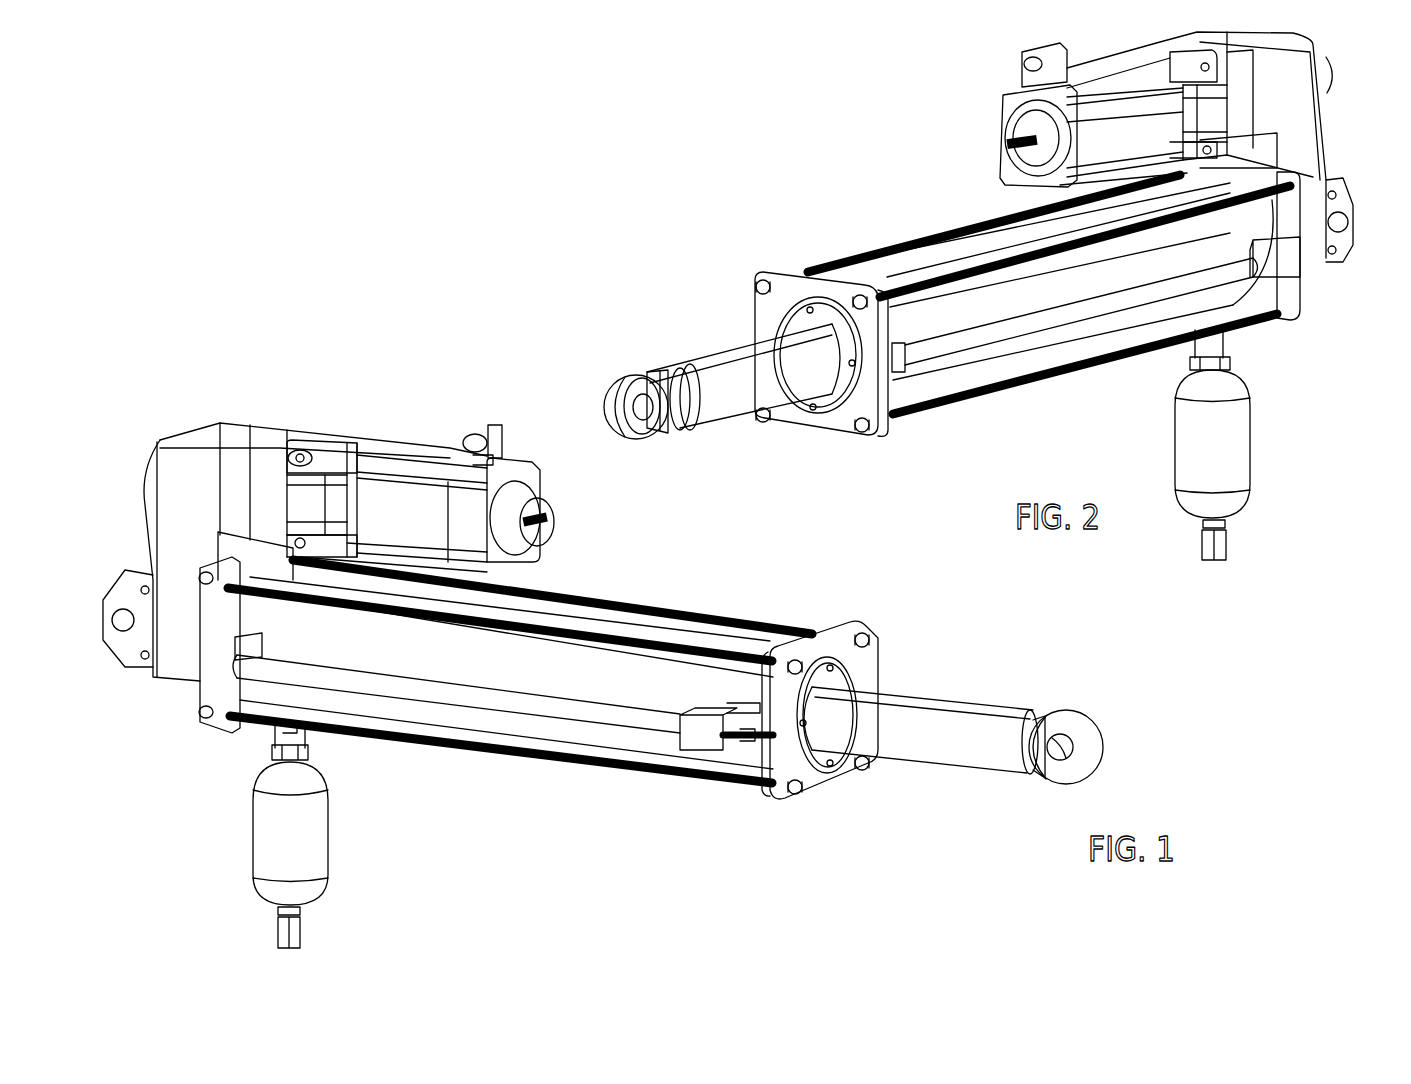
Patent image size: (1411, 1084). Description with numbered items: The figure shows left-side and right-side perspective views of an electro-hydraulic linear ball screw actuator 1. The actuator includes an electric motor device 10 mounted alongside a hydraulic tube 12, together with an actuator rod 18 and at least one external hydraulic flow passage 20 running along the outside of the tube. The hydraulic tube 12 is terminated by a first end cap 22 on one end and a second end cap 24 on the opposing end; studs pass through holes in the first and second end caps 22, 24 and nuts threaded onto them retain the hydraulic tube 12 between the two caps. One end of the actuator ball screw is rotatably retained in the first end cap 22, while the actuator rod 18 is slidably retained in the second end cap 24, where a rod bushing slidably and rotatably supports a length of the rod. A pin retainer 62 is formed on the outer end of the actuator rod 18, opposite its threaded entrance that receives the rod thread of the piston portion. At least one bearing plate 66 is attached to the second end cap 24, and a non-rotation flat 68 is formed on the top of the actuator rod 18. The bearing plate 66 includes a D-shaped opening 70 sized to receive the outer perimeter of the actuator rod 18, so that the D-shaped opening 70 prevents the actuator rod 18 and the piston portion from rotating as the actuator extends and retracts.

In FIG. 1, the electro-hydraulic linear ball screw actuator 1 is at (757, 578).
In FIG. 2, the electro-hydraulic linear ball screw actuator 1 is at (902, 180).
In FIG. 1, the electric motor device 10 is at (272, 392).
In FIG. 2, the electric motor device 10 is at (985, 155).
In FIG. 1, the hydraulic tube 12 is at (545, 738).
In FIG. 2, the hydraulic tube 12 is at (935, 385).
In FIG. 1, the actuator rod 18 is at (913, 767).
In FIG. 2, the actuator rod 18 is at (718, 410).
In FIG. 1, the external hydraulic flow passage 20 is at (462, 694).
In FIG. 2, the external hydraulic flow passage 20 is at (1068, 327).
In FIG. 1, the first end cap 22 is at (215, 722).
In FIG. 1, the second end cap 24 is at (822, 780).
In FIG. 2, the second end cap 24 is at (821, 354).
In FIG. 1, the pin retainer 62 is at (1092, 723).
In FIG. 2, the pin retainer 62 is at (636, 404).
In FIG. 1, the bearing plate 66 is at (848, 672).
In FIG. 1, the non-rotation flat 68 is at (975, 700).
In FIG. 1, the D-shaped opening 70 is at (840, 680).